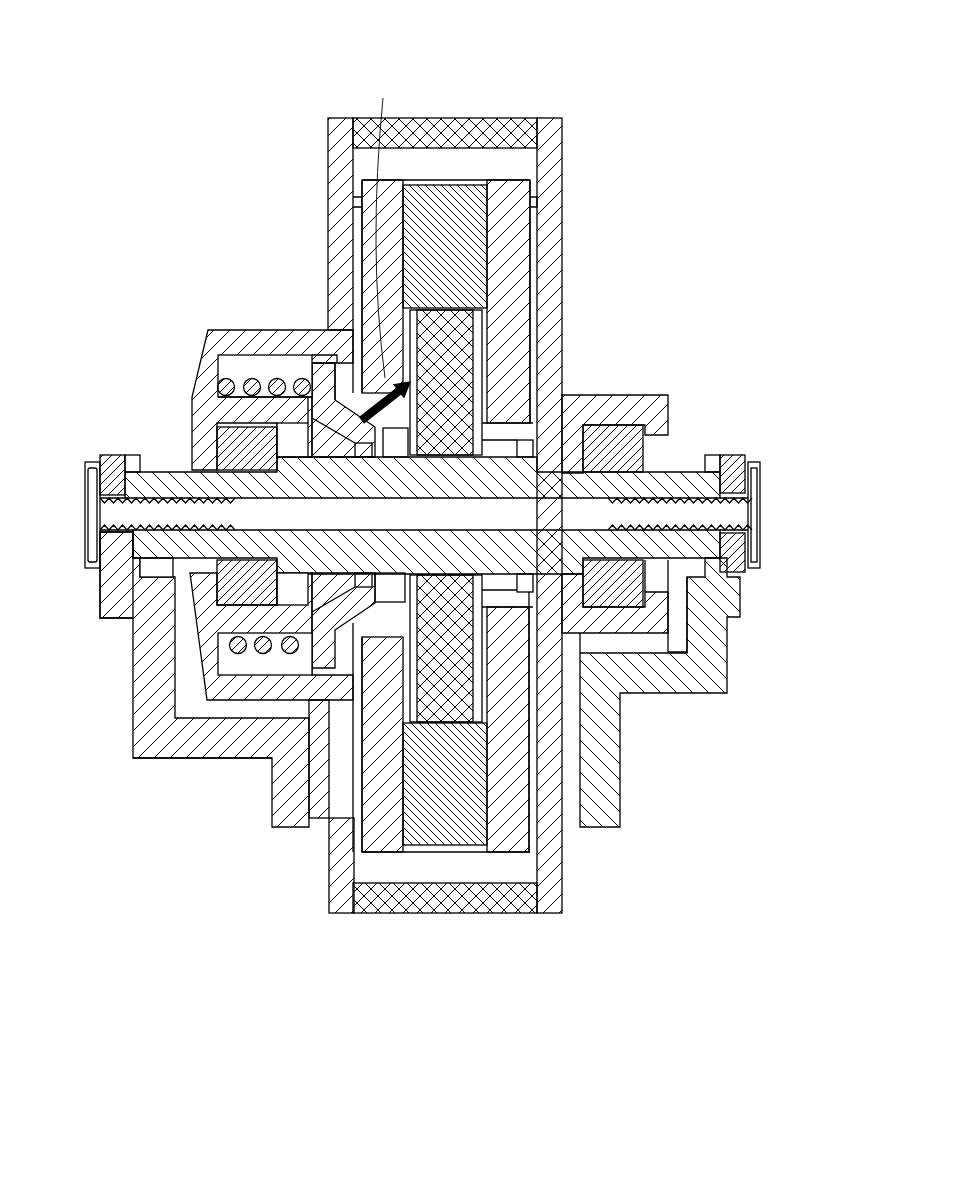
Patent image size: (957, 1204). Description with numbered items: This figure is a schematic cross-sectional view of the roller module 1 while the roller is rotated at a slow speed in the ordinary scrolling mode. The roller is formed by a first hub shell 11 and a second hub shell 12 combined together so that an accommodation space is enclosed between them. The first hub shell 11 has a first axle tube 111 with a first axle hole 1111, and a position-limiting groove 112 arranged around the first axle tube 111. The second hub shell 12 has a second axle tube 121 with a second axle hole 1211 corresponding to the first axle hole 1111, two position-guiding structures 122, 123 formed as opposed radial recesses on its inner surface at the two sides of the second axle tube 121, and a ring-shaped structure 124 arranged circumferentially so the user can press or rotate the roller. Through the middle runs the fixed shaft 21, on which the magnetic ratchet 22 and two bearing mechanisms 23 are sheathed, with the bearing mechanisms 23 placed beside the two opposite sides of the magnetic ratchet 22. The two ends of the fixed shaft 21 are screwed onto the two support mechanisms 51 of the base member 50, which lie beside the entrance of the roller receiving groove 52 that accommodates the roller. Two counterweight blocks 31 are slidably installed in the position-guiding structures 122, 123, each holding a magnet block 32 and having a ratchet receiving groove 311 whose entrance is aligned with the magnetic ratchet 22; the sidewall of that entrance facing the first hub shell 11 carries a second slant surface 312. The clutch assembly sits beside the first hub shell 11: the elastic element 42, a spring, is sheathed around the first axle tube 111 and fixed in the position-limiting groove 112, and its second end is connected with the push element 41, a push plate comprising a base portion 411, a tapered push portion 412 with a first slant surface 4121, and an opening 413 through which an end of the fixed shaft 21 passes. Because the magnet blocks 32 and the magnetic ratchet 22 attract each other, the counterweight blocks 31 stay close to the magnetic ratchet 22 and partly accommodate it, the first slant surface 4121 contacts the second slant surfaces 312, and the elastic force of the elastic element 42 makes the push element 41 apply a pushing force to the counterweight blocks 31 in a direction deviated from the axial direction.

The roller module 1 is at (46, 27).
The first hub shell 11 is at (328, 150).
The first axle tube 111 is at (135, 640).
The first axle hole 1111 is at (105, 560).
The position-limiting groove 112 is at (238, 665).
The second hub shell 12 is at (562, 176).
The second axle tube 121 is at (658, 412).
The second axle hole 1211 is at (735, 600).
The position-guiding structure 122 is at (560, 738).
The ring-shaped structure 124 is at (452, 130).
The fixed shaft 21 is at (598, 655).
The magnetic ratchet 22 is at (455, 335).
The bearing mechanism 23 is at (207, 610).
The counterweight block 31 is at (356, 196).
The ratchet receiving groove 311 is at (492, 370).
The second slant surface 312 is at (372, 378).
The magnet block 32 is at (478, 245).
The push element 41 is at (322, 368).
The base portion 411 is at (345, 360).
The push portion 412 is at (225, 398).
The first slant surface 4121 is at (300, 405).
The opening 413 is at (245, 447).
The elastic element 42 is at (228, 380).
The base member 50 is at (140, 735).
The support mechanism 51 is at (95, 452).
The roller receiving groove 52 is at (572, 790).
The position-guiding structure 123 is at (508, 330).